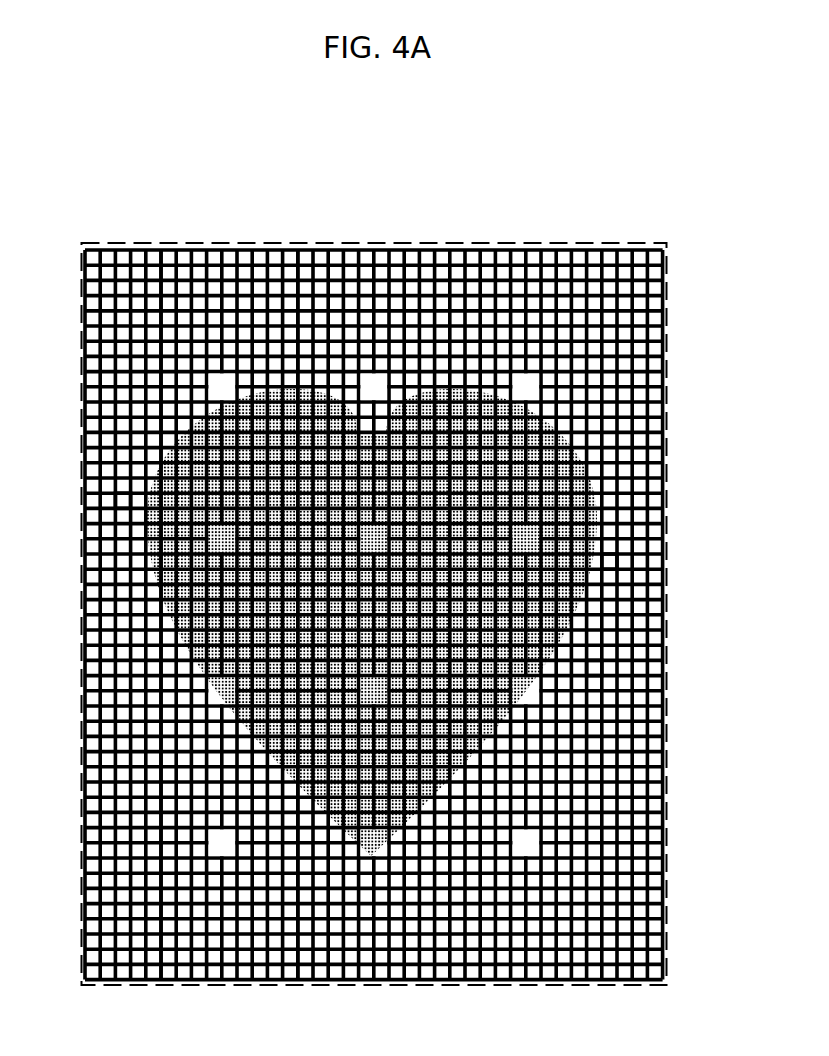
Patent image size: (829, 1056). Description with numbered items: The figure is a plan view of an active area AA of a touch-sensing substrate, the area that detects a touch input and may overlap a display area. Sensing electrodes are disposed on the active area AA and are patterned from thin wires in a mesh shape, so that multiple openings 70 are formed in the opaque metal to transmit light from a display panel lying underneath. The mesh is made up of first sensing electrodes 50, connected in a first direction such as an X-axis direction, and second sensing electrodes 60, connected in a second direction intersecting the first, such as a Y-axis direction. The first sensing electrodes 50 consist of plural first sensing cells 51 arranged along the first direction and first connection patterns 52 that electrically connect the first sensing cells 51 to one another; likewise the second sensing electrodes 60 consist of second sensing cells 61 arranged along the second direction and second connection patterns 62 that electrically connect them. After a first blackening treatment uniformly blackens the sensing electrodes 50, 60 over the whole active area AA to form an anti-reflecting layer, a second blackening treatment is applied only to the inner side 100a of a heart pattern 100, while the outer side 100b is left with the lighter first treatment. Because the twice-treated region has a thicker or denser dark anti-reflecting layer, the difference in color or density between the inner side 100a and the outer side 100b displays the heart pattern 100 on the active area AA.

The first sensing electrodes 50 is at (148, 454).
The first sensing cells 51 is at (118, 497).
The first connection patterns 52 is at (293, 305).
The second sensing electrodes 60 is at (145, 316).
The second sensing cells 61 is at (163, 327).
The second connection patterns 62 is at (297, 307).
The openings 70 is at (95, 372).
The heart pattern 100 is at (552, 704).
The inner side of heart pattern 100a is at (603, 560).
The outer side of heart pattern 100b is at (595, 667).
The active area AA is at (493, 216).